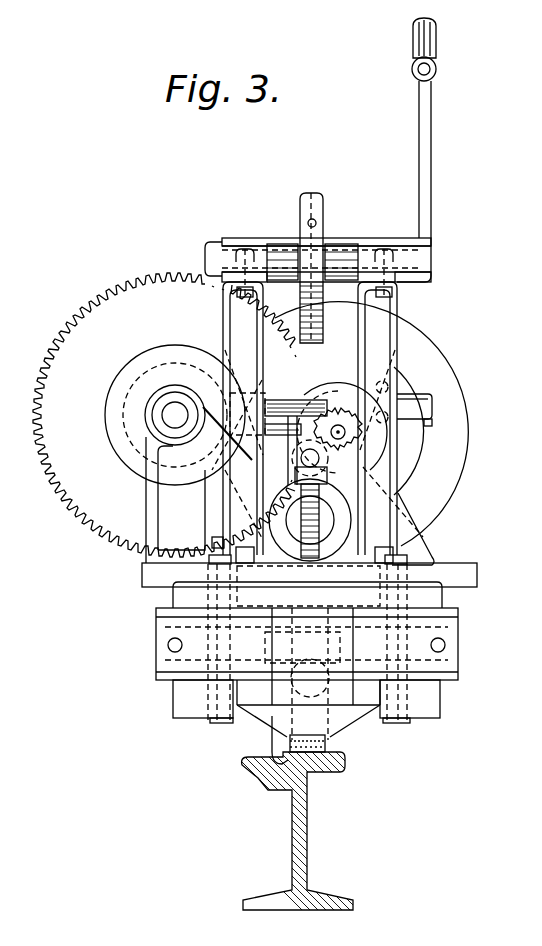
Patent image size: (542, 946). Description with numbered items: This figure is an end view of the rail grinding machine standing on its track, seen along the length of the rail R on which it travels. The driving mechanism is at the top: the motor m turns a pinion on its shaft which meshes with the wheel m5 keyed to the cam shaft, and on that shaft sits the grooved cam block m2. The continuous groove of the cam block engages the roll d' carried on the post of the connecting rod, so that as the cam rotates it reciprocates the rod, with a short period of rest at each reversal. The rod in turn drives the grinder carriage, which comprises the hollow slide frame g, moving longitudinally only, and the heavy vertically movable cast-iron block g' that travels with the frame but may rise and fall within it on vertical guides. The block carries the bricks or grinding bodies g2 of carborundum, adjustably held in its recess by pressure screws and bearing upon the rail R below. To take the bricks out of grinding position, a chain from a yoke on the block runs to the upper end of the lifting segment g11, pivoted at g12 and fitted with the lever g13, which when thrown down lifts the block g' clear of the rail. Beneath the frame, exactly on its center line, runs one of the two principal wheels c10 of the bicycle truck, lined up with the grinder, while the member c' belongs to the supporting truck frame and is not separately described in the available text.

The lever g13 is at (428, 137).
The lifting segment g11 is at (329, 219).
The wheel m5 is at (164, 415).
The grooved cam block m2 is at (113, 413).
The motor m is at (428, 350).
The pivot g12 is at (433, 408).
The roll d' is at (278, 429).
The hollow slide frame g is at (309, 637).
The clamp plate c' is at (324, 665).
The cast-iron block g' is at (312, 684).
The principal wheel c10 is at (272, 731).
The grinding bricks g2 is at (290, 747).
The rail R is at (308, 853).